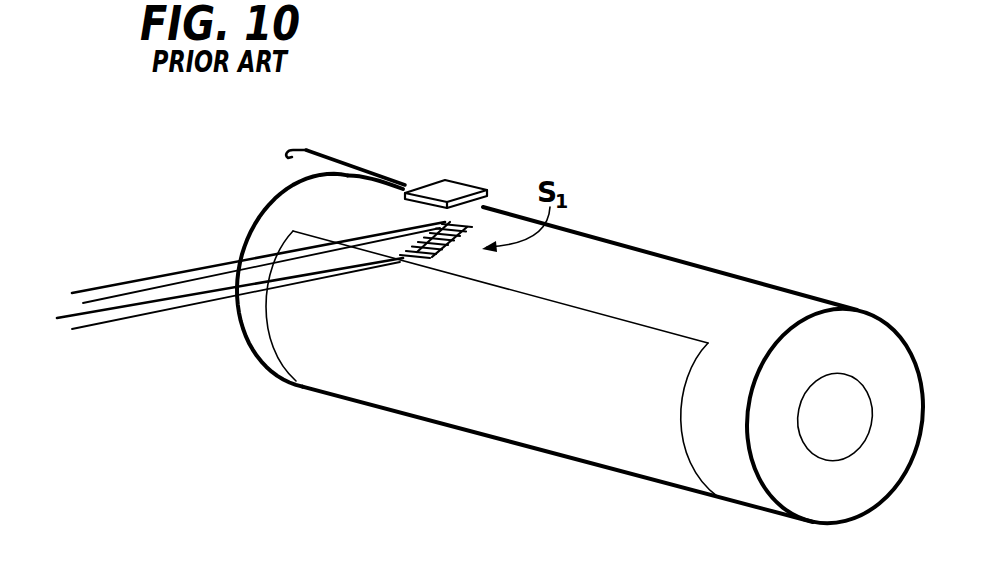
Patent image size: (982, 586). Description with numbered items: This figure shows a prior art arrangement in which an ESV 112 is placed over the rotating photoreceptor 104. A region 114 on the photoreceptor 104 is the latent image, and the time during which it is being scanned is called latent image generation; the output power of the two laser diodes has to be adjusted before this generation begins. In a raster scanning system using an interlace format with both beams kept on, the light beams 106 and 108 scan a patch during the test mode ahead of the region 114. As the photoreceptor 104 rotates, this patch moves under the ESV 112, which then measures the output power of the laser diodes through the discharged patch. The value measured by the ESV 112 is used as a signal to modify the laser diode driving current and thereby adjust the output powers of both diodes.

The photoreceptor 104 is at (776, 255).
The light beam 106 is at (182, 272).
The light beam 108 is at (206, 303).
The ESV 112 is at (438, 184).
The region 114 is at (443, 403).